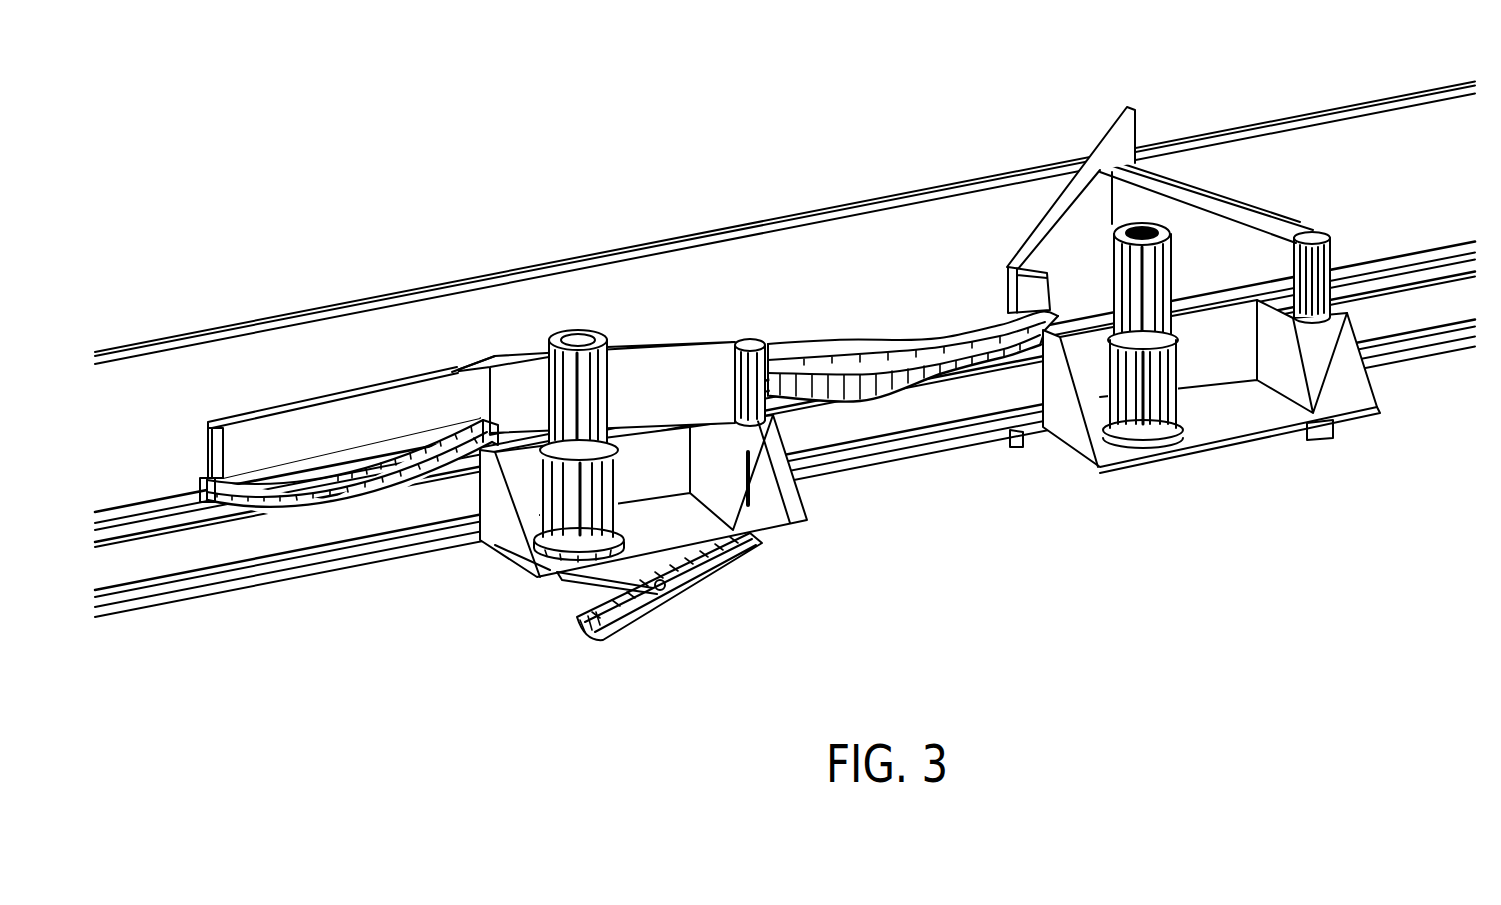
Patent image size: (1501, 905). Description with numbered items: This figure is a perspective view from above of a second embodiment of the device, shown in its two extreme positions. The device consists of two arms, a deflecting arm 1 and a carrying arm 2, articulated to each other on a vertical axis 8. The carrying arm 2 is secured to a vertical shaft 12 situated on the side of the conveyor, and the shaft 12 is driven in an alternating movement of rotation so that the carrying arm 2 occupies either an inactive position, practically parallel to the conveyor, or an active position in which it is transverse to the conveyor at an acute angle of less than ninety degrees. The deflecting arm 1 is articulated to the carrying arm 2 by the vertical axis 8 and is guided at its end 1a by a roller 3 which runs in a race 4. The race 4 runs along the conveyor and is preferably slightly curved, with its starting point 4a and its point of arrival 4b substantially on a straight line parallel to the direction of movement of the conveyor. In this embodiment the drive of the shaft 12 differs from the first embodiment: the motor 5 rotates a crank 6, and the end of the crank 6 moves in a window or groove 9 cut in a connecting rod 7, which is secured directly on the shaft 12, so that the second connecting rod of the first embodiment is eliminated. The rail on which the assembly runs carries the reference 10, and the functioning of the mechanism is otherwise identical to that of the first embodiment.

The deflecting arm 1 is at (1130, 138).
The end of deflecting arm 1a is at (1010, 283).
The carrying arm 2 is at (1273, 222).
The roller 3 is at (1010, 322).
The race 4 is at (313, 500).
The starting point of race 4a is at (205, 497).
The point of arrival of race 4b is at (483, 460).
The motor 5 is at (1170, 265).
The crank 6 is at (607, 577).
The connecting rod 7 is at (656, 586).
The vertical axis 8 is at (458, 373).
The window or groove 9 is at (620, 603).
The lower guide rail 10 is at (930, 412).
The vertical shaft 12 is at (790, 483).